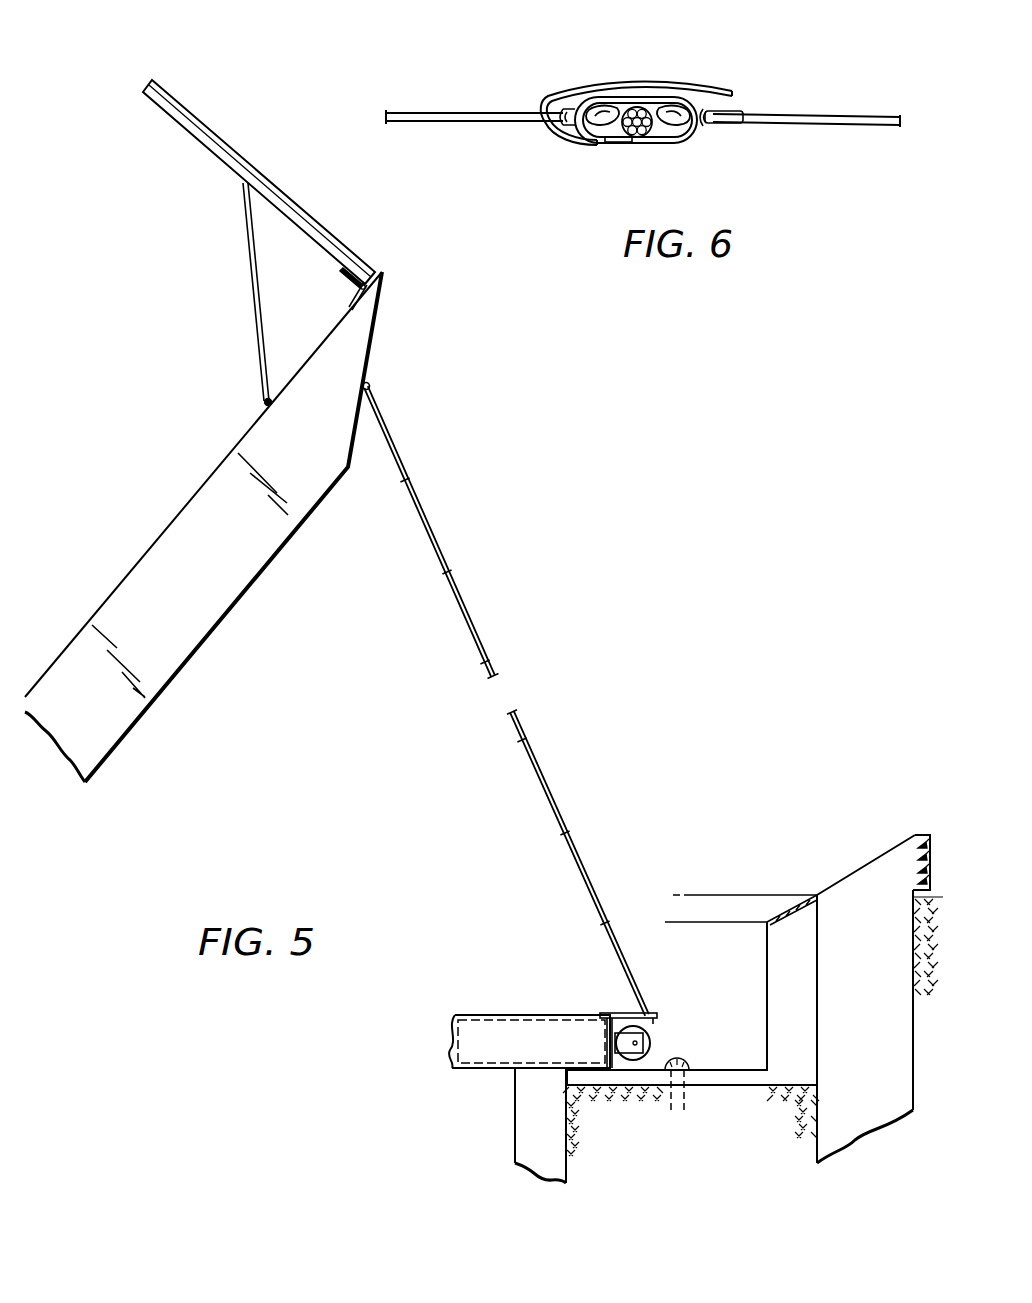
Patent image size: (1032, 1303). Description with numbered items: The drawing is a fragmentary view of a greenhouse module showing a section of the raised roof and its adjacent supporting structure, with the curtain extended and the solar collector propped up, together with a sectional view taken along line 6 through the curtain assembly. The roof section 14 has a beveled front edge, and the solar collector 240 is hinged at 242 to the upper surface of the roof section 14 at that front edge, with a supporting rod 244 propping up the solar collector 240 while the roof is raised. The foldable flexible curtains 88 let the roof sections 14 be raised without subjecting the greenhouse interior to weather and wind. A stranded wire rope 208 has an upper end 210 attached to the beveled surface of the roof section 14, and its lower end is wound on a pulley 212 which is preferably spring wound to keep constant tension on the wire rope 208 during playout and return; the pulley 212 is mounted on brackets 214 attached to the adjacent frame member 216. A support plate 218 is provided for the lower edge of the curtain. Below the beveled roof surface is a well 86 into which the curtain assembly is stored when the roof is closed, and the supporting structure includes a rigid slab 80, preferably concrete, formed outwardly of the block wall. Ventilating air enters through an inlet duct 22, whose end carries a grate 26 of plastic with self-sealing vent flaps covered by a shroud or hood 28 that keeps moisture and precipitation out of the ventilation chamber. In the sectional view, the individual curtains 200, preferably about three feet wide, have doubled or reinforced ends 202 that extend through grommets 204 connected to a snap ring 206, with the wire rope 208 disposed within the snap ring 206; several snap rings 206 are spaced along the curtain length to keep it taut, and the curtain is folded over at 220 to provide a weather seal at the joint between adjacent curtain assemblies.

In FIG. 5, the roof section 14 is at (217, 583).
In FIG. 5, the solar collector 240 is at (302, 222).
In FIG. 5, the supporting rod 244 is at (258, 282).
In FIG. 5, the hinge 242 is at (350, 280).
In FIG. 5, the upper end of wire rope 210 is at (372, 384).
In FIG. 5, the snap ring 206 is at (405, 478).
In FIG. 6, the snap ring 206 is at (628, 137).
In FIG. 5, the foldable flexible curtains 88 is at (555, 778).
In FIG. 6, the foldable flexible curtains 88 is at (747, 134).
In FIG. 5, the section line 6— 6 is at (533, 866).
In FIG. 5, the frame member 216 is at (530, 1018).
In FIG. 5, the support plate 218 is at (620, 1013).
In FIG. 5, the pulley 212 is at (650, 1047).
In FIG. 5, the brackets 214 is at (632, 1053).
In FIG. 5, the well 86 is at (710, 1052).
In FIG. 5, the rigid slab 80 is at (742, 1078).
In FIG. 5, the inlet duct 22 is at (817, 1013).
In FIG. 5, the shroud or hood 28 is at (857, 870).
In FIG. 5, the grate 26 is at (932, 853).
In FIG. 6, the curtain 200 is at (498, 118).
In FIG. 6, the curtain ends 202 is at (560, 127).
In FIG. 6, the curtain fold 220 is at (620, 82).
In FIG. 6, the grommets 204 is at (573, 110).
In FIG. 6, the stranded wire rope 208 is at (637, 107).